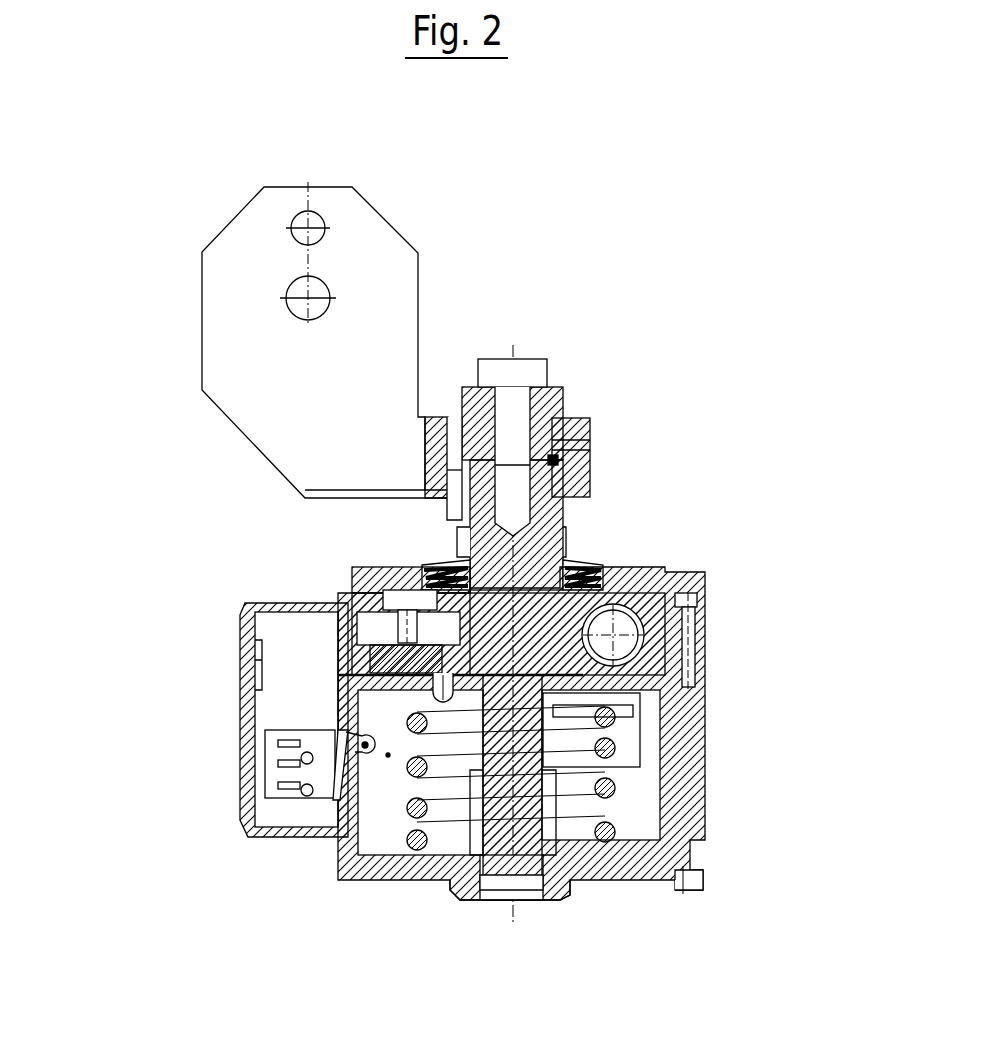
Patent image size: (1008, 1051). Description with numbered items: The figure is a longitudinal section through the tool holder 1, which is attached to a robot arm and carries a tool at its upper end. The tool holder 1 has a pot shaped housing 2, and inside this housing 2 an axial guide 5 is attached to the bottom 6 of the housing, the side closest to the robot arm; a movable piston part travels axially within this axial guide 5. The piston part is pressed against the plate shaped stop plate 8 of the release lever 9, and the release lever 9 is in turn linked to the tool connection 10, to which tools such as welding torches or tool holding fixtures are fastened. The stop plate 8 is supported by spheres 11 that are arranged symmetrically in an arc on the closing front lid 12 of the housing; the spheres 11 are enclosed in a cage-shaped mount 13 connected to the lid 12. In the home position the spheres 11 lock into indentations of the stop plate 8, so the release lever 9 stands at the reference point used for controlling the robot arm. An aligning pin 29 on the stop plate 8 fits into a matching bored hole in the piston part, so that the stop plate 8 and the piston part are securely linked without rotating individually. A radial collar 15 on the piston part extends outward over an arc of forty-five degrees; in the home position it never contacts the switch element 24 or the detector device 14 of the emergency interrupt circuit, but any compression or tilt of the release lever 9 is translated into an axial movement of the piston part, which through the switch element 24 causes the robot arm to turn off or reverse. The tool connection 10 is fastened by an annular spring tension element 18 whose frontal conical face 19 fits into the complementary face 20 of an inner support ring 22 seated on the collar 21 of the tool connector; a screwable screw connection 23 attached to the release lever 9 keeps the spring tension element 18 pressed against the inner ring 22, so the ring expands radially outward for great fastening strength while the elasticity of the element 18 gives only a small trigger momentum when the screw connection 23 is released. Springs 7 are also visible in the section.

The tool holder 1 is at (607, 193).
The pot shaped housing 2 is at (680, 745).
The axial guide 5 is at (570, 893).
The bottom 6 is at (683, 885).
The compression spring 7 is at (612, 795).
The stop plate 8 is at (638, 633).
The release lever 9 is at (535, 572).
The tool connection 10 is at (318, 458).
The spheres 11 is at (705, 597).
The front lid 12 is at (378, 622).
The mount 13 is at (370, 628).
The detector device 14 is at (258, 808).
The radial collar 15 is at (388, 755).
The annular spring tension element 18 is at (560, 392).
The frontal conical face 19 is at (590, 430).
The complementary face 20 is at (590, 440).
The collar 21 is at (553, 460).
The inner support ring 22 is at (590, 450).
The screw connection 23 is at (532, 370).
The switch element 24 is at (325, 778).
The aligning pin 29 is at (380, 690).